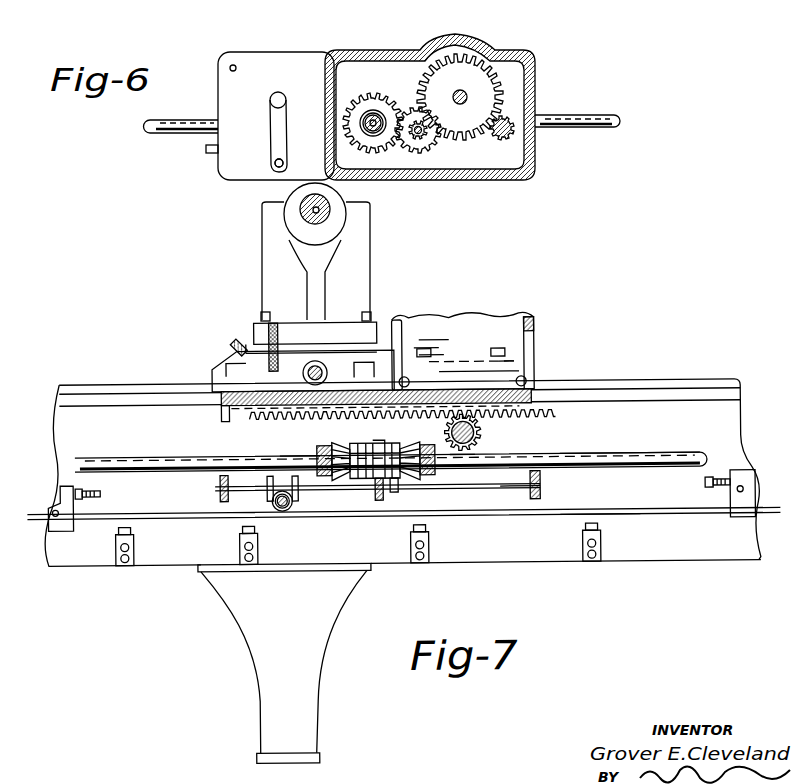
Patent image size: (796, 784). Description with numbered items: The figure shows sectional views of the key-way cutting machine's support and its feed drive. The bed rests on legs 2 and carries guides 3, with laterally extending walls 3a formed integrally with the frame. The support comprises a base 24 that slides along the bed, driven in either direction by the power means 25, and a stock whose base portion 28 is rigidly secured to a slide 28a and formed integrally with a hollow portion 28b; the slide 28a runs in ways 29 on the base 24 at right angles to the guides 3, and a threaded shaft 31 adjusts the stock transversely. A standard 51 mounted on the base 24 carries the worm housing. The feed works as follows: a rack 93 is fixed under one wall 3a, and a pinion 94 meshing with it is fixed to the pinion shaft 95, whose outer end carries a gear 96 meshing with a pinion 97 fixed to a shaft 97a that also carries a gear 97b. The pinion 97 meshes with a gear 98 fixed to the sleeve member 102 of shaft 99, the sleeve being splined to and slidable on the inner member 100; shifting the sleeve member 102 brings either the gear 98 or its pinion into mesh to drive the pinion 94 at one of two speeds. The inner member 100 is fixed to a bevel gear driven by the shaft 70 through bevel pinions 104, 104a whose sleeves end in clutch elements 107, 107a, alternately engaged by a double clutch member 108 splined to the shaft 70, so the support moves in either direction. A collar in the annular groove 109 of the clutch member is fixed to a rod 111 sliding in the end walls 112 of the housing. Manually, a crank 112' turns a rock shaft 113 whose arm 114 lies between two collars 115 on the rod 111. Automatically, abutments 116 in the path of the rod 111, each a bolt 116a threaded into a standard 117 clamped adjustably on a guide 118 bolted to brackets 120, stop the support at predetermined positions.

In FIG. 7, the legs 2 is at (309, 663).
In FIG. 7, the guides 3 is at (657, 382).
In FIG. 7, the laterally extending walls 3a is at (650, 403).
In FIG. 7, the base 24 is at (232, 412).
In FIG. 7, the power means 25 is at (609, 438).
In FIG. 7, the base portion 28 is at (372, 324).
In FIG. 7, the slide 28a is at (244, 346).
In FIG. 6, the hollow portion 28b is at (356, 210).
In FIG. 7, the ways or guides 29 is at (366, 380).
In FIG. 7, the shaft 31 is at (340, 368).
In FIG. 7, the standard 51 is at (480, 330).
In FIG. 6, the shaft 70 is at (600, 97).
In FIG. 7, the shaft 70 is at (170, 440).
In FIG. 7, the rack 93 is at (553, 412).
In FIG. 7, the pinion 94 is at (480, 434).
In FIG. 6, the pinion shaft 95 is at (470, 76).
In FIG. 7, the pinion shaft 95 is at (464, 470).
In FIG. 6, the gear 96 is at (470, 46).
In FIG. 6, the pinion 97 is at (420, 141).
In FIG. 6, the shaft 97a is at (500, 138).
In FIG. 6, the gear 97b is at (410, 108).
In FIG. 6, the gear 98 is at (387, 97).
In FIG. 6, the shaft 99 is at (366, 126).
In FIG. 6, the inner member 100 is at (373, 134).
In FIG. 6, the sleeve member 102 is at (365, 116).
In FIG. 7, the bevel pinion 104 is at (348, 441).
In FIG. 7, the bevel pinion 104a is at (430, 444).
In FIG. 7, the clutch element 107 is at (375, 491).
In FIG. 7, the clutch element 107a is at (394, 491).
In FIG. 7, the double clutch member 108 is at (377, 500).
In FIG. 7, the annular groove 109 is at (378, 446).
In FIG. 7, the rod 111 is at (541, 500).
In FIG. 7, the end walls 112 is at (381, 490).
In FIG. 6, the crank 112' is at (250, 132).
In FIG. 6, the rock shaft 113 is at (275, 168).
In FIG. 7, the rock shaft 113 is at (283, 510).
In FIG. 7, the arm 114 is at (298, 475).
In FIG. 7, the collars 115 is at (268, 502).
In FIG. 7, the abutments 116 is at (398, 492).
In FIG. 7, the bolt 116a is at (100, 491).
In FIG. 7, the standard 117 is at (55, 530).
In FIG. 7, the guide 118 is at (640, 518).
In FIG. 7, the brackets 120 is at (115, 545).